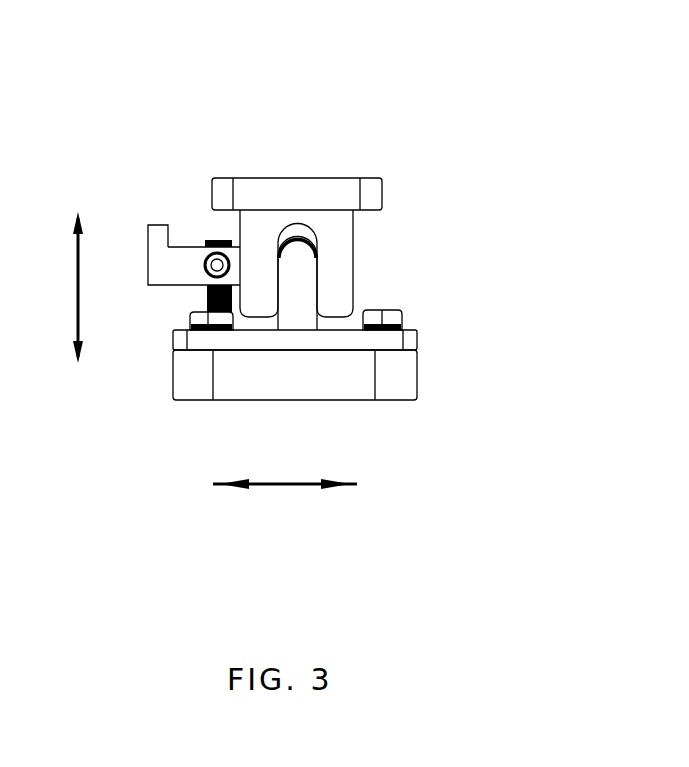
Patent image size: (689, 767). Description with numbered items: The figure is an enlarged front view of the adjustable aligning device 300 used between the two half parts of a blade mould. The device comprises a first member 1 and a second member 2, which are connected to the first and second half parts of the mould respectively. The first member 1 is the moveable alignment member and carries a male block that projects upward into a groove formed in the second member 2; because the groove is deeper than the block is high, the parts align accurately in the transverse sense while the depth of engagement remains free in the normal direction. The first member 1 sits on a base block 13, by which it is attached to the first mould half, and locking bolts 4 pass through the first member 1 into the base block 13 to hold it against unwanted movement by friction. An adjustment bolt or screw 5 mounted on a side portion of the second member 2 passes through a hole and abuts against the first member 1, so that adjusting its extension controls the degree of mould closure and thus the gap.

The aligning device 300 is at (461, 117).
The first member 1 is at (288, 298).
The second member 2 is at (332, 233).
The locking bolts 4 is at (400, 312).
The adjustment bolt or screw 5 is at (202, 297).
The base block 13 is at (258, 372).